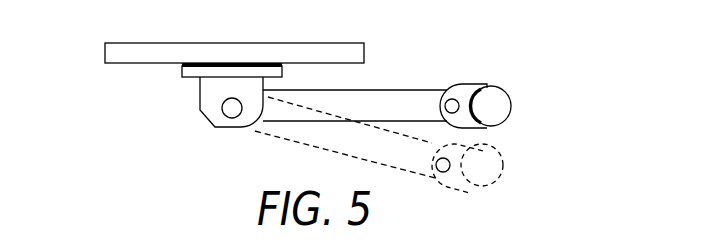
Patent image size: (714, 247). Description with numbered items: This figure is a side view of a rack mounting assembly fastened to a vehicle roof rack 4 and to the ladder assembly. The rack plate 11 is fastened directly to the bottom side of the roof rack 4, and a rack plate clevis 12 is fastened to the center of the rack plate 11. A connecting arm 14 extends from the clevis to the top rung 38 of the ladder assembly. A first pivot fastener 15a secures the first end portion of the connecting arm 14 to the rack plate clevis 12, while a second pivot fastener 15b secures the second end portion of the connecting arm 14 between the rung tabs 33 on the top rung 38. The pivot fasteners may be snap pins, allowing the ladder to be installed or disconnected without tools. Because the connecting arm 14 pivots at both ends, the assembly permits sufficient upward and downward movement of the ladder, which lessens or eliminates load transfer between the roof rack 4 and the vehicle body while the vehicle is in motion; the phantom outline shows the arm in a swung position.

The roof rack 4 is at (140, 51).
The rack plate 11 is at (188, 69).
The rack plate clevis 12 is at (212, 92).
The connecting arm 14 is at (397, 98).
The first pivot fastener 15a is at (222, 111).
The second pivot fastener 15b is at (453, 99).
The rung tabs 33 is at (473, 84).
The top rung 38 is at (502, 105).